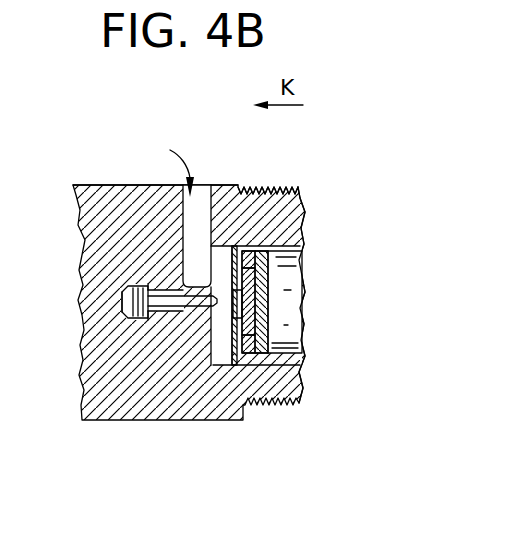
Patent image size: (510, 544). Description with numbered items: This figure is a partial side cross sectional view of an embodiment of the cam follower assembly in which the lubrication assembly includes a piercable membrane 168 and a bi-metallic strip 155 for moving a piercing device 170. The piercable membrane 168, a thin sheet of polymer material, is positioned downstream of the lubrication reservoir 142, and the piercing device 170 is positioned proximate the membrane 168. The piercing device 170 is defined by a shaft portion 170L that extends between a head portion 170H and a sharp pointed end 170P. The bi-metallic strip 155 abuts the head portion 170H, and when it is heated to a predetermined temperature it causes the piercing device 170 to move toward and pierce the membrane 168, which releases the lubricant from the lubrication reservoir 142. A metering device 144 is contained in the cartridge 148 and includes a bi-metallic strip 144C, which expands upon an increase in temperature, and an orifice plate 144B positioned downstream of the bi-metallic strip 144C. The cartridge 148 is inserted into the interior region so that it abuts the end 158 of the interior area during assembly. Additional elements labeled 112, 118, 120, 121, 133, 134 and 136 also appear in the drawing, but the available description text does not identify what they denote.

The housing body 112 is at (80, 318).
The upper housing member 118 is at (100, 185).
The threaded plug member 120 is at (300, 191).
The threads 121 is at (242, 190).
The pin passage 133 is at (232, 305).
The bore 134 is at (201, 200).
The insertion direction arrow 136 is at (171, 161).
The lubrication reservoir 142 is at (301, 330).
The metering device 144 is at (334, 370).
The orifice plate 144B is at (290, 338).
The bi-metallic strip 144C is at (307, 348).
The cartridge 148 is at (262, 252).
The bi-metallic strip 155 is at (122, 300).
The end of the interior area 158 is at (250, 312).
The piercable membrane 168 is at (213, 325).
The piercing device 170 is at (192, 305).
The head portion 170H is at (128, 290).
The shaft portion 170L is at (150, 287).
The sharp pointed end 170P is at (217, 300).